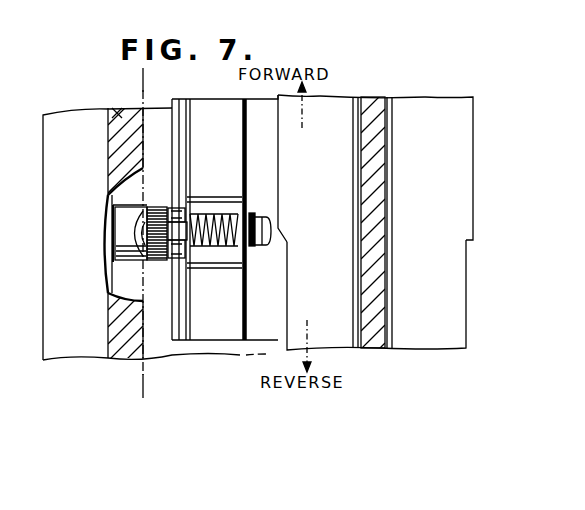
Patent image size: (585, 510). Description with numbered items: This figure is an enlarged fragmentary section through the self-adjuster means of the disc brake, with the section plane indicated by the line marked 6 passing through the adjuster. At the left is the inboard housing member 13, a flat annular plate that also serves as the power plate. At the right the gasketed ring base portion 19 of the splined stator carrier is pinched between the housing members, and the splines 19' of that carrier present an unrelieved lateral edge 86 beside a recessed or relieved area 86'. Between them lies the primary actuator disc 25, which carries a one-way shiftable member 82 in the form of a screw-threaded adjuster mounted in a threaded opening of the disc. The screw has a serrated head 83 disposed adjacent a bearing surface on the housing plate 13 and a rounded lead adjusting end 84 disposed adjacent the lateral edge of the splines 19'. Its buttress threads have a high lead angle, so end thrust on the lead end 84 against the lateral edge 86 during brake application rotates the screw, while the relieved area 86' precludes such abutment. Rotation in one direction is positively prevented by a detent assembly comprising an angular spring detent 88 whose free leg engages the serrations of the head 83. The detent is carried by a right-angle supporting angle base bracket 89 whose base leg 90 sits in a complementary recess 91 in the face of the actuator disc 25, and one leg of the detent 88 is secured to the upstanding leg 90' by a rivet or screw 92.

The section line 6- 6 is at (141, 78).
The inboard housing member 13 is at (81, 122).
The gasketed ring base portion 19 is at (396, 229).
The splines of the stator carrier 19' is at (372, 83).
The primary actuator disc 25 is at (205, 123).
The one-way shiftable member 82 is at (249, 213).
The head 83 is at (157, 207).
The rounded lead adjusting end 84 is at (268, 246).
The lateral edge 86 is at (395, 168).
The recessed or relieved area 86' is at (402, 295).
The angular spring detent 88 is at (128, 249).
The supporting angle base bracket 89 is at (120, 193).
The base leg 90 is at (194, 210).
The upstanding leg 90' is at (104, 227).
The recess 91 is at (187, 266).
The rivet or screw 92 is at (138, 231).